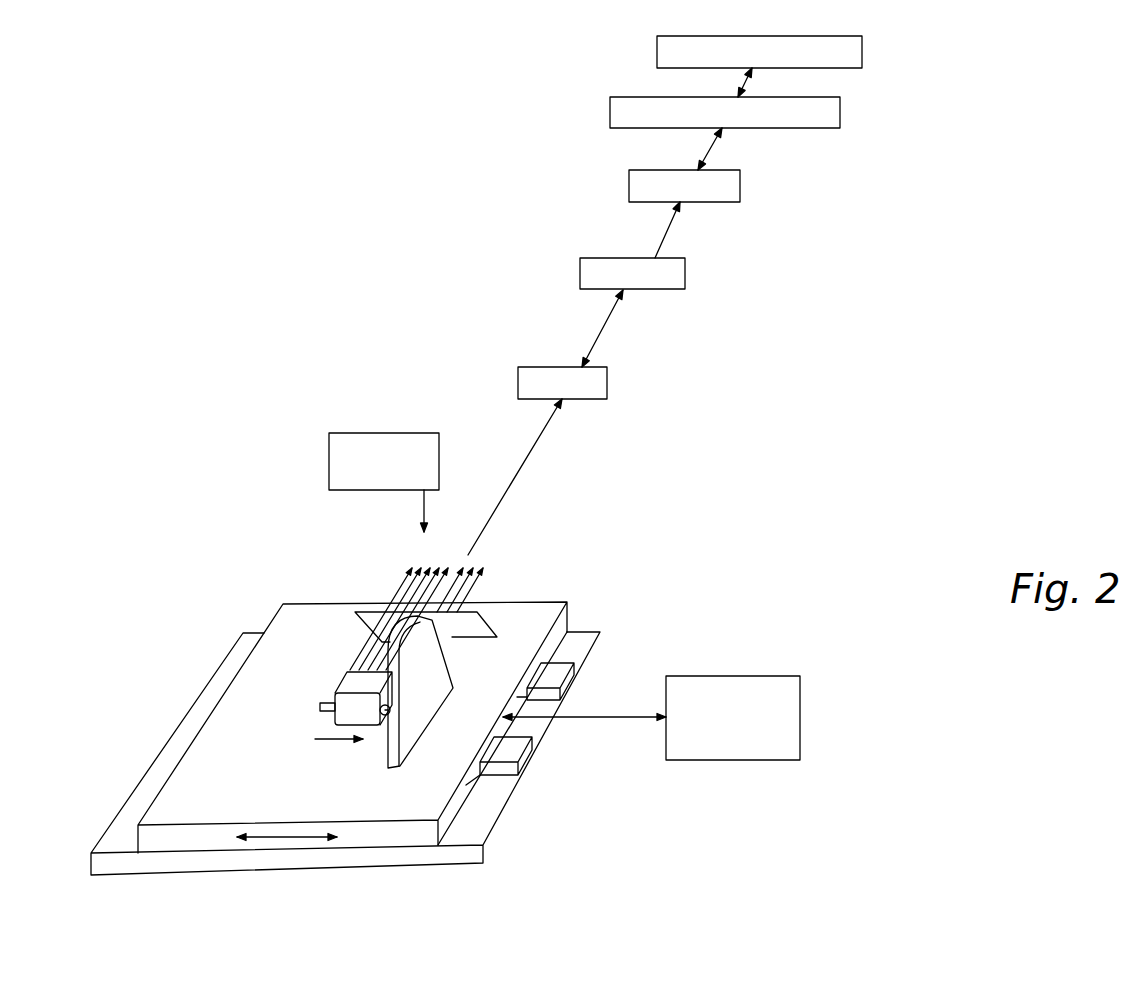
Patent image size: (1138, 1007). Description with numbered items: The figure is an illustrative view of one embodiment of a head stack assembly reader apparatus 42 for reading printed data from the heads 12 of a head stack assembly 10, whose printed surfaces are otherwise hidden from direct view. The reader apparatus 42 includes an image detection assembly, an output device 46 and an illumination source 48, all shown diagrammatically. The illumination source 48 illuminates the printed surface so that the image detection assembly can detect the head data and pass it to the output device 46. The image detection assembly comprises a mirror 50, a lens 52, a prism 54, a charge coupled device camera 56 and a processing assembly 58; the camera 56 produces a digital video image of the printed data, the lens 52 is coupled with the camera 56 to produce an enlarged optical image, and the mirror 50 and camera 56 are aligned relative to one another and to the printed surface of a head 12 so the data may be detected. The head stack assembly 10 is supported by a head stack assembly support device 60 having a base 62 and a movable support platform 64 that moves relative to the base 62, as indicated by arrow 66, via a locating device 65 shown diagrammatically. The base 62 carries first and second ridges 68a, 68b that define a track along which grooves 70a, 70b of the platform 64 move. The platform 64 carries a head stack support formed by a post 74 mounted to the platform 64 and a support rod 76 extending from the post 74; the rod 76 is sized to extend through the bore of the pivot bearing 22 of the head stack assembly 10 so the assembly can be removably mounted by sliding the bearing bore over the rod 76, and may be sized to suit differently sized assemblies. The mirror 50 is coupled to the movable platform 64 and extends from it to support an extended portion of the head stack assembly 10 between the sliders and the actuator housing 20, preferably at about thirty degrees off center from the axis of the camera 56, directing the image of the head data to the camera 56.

The head stack assembly 10 is at (348, 652).
The heads 12 is at (420, 566).
The actuator housing 20 is at (347, 682).
The pivot bearing 22 is at (383, 727).
The head stack assembly reader apparatus 42 is at (712, 630).
The output device 46 is at (862, 52).
The illumination source 48 is at (345, 433).
The mirror 50 is at (463, 618).
The lens 52 is at (607, 380).
The prism 54 is at (686, 268).
The CCD camera 56 is at (741, 178).
The processing assembly 58 is at (841, 103).
The head stack assembly support device 60 is at (602, 630).
The base 62 is at (484, 858).
The movable support platform 64 is at (240, 781).
The locating device 65 is at (767, 672).
The arrow 66 is at (281, 836).
The first ridge 68a is at (520, 766).
The second ridge 68b is at (573, 683).
The groove 70a is at (482, 771).
The groove 70b is at (517, 697).
The post 74 is at (430, 694).
The support rod 76 is at (326, 702).